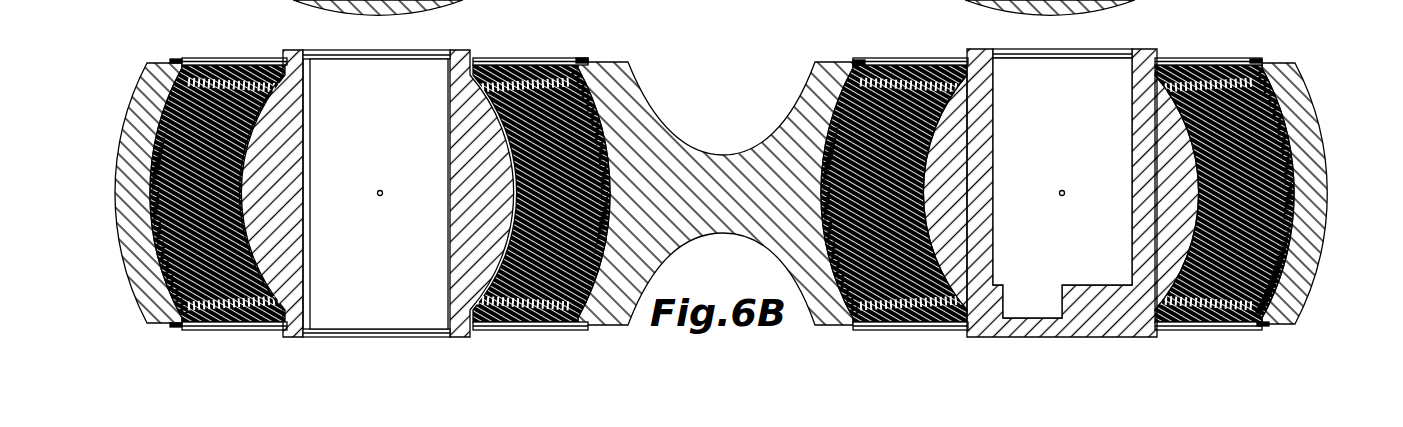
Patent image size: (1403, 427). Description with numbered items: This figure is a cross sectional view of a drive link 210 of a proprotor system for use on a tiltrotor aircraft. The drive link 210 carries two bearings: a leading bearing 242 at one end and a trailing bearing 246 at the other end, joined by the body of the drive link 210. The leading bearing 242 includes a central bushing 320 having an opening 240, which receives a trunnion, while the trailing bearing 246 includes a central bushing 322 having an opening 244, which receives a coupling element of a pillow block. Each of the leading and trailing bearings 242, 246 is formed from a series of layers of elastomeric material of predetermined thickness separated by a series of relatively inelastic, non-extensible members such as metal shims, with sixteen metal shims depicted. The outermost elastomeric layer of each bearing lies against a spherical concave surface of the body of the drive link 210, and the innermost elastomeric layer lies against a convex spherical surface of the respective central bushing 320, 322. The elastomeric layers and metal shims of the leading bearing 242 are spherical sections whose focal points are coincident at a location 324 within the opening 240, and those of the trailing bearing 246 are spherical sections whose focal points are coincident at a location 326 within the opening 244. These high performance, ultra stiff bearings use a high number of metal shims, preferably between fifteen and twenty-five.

The drive link 210 is at (752, 138).
The trailing bearing 246 is at (205, 65).
The leading bearing 242 is at (1237, 63).
The opening 244 is at (396, 138).
The opening 240 is at (1050, 138).
The central bushing 322 is at (468, 198).
The central bushing 320 is at (945, 198).
The location 326 is at (382, 198).
The location 324 is at (1061, 198).